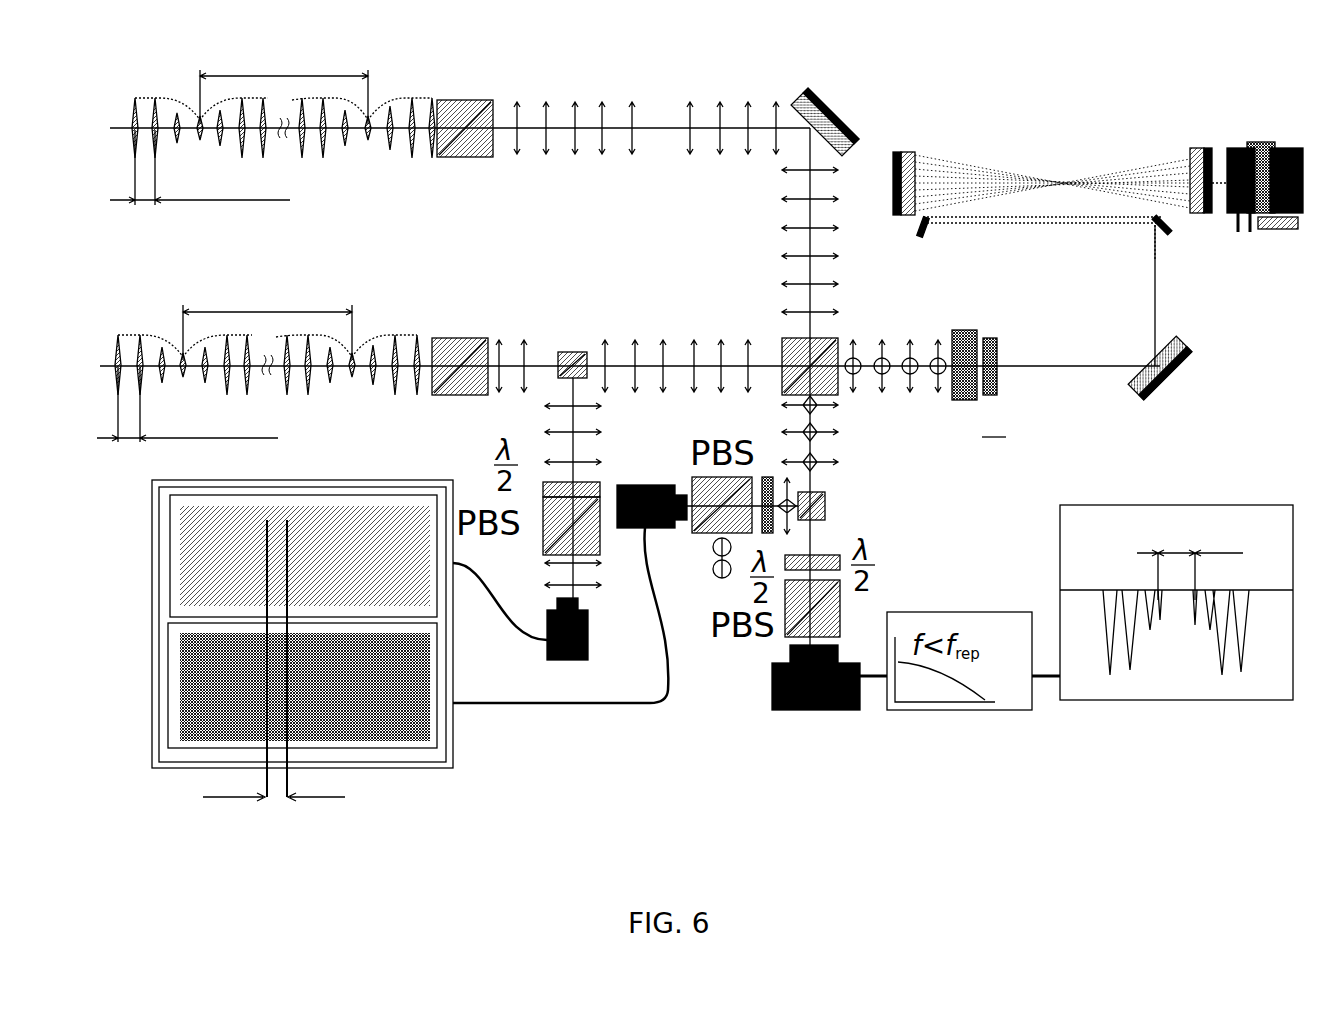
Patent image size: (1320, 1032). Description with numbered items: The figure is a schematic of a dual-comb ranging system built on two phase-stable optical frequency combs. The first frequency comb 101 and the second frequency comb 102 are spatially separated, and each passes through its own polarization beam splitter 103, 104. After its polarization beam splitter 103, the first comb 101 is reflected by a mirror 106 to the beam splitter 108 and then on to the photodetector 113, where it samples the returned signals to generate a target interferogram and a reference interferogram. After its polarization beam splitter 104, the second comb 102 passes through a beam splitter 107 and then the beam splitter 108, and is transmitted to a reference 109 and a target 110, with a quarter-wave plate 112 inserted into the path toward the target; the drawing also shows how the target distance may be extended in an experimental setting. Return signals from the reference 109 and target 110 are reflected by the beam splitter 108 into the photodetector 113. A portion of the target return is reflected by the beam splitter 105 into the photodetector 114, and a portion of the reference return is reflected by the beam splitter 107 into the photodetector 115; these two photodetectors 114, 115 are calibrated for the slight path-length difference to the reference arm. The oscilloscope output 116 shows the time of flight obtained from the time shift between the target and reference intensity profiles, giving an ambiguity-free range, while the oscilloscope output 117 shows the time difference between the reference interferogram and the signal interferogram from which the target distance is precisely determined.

The first frequency comb 101 is at (233, 115).
The second frequency comb 102 is at (226, 351).
The polarization beam splitter 103 is at (460, 92).
The polarization beam splitter 104 is at (458, 329).
The beam splitter 105 is at (867, 484).
The mirror 106 is at (829, 86).
The beam splitter 107 is at (607, 321).
The beam splitter 108 is at (769, 323).
The reference 109 is at (944, 344).
The target 110 is at (1258, 154).
The quarter-wave plate 112 is at (1005, 418).
The photodetector 113 is at (816, 715).
The photodetector 114 is at (652, 475).
The photodetector 115 is at (570, 635).
The oscilloscope output 116 is at (275, 651).
The oscilloscope output 117 is at (1176, 609).